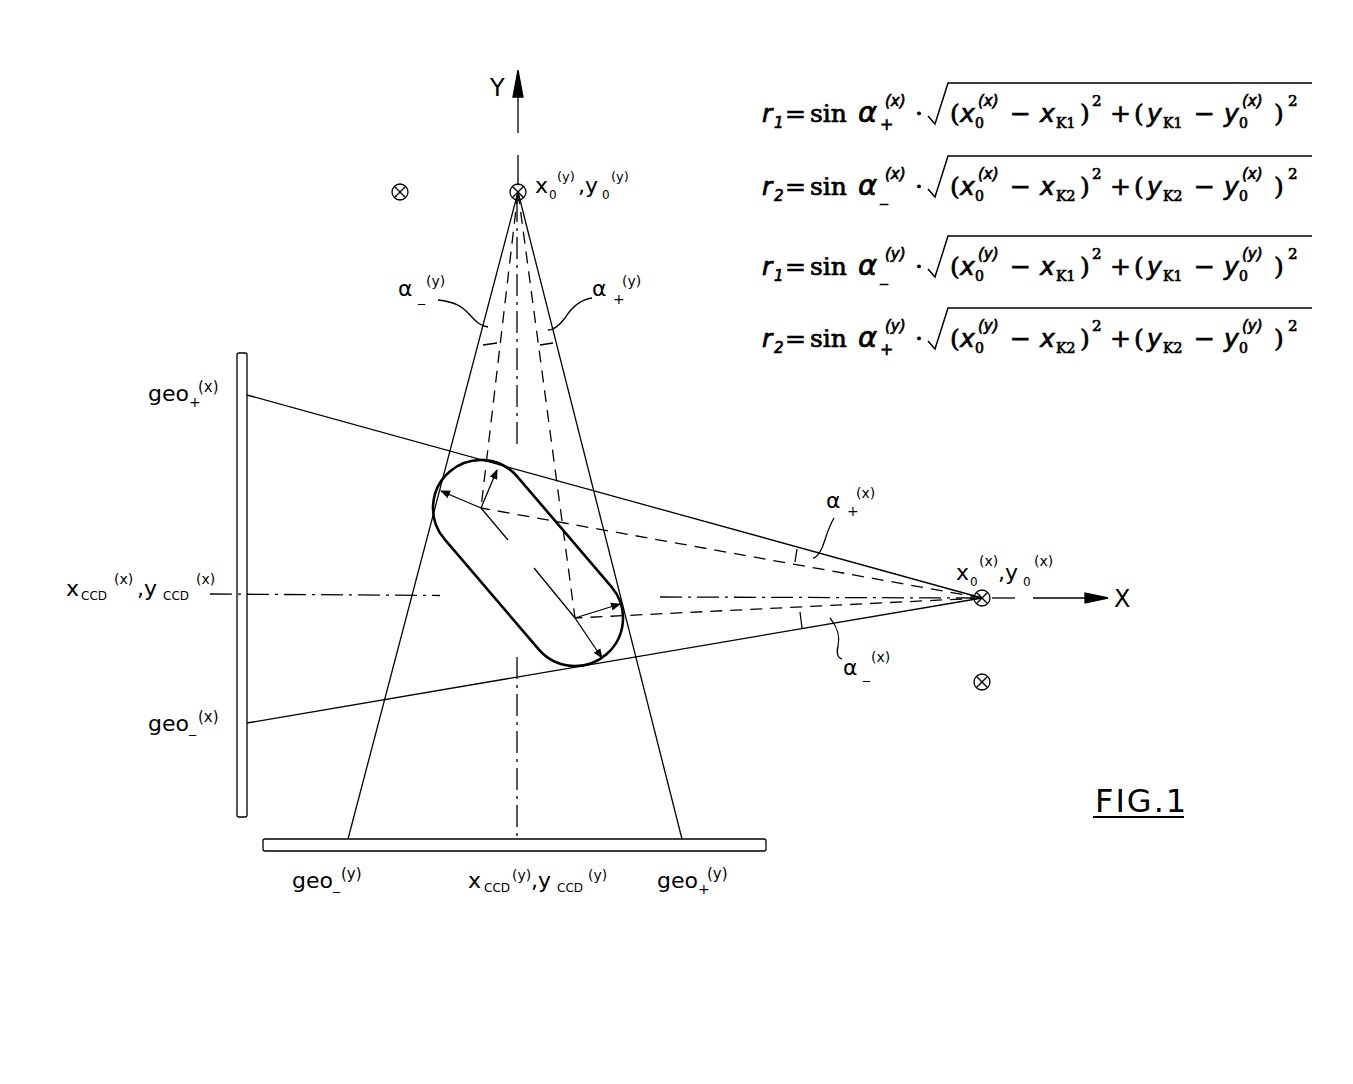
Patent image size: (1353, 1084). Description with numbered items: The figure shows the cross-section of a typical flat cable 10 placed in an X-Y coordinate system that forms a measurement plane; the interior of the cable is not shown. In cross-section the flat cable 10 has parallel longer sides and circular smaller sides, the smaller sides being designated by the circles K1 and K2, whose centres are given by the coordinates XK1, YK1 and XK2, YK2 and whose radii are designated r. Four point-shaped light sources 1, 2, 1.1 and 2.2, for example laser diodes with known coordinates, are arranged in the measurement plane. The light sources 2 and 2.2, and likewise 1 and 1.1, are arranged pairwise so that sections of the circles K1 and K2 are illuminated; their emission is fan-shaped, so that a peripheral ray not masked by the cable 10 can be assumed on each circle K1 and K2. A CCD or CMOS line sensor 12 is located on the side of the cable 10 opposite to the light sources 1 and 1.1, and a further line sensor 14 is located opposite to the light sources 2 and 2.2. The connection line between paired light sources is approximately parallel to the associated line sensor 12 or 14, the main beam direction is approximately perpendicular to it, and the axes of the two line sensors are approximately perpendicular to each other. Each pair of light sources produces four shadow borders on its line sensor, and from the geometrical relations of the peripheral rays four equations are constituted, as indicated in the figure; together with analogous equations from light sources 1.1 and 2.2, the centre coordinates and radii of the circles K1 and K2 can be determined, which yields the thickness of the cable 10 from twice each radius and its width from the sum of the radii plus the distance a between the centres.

The point-shaped light source 1 is at (989, 614).
The point-shaped light source 1.1 is at (997, 698).
The point-shaped light source 2 is at (507, 178).
The point-shaped light source 2.2 is at (388, 176).
The flat cable 10 is at (486, 595).
The line sensor 12 is at (752, 840).
The line sensor 14 is at (238, 503).
The circle K1 is at (441, 456).
The circle K2 is at (620, 656).